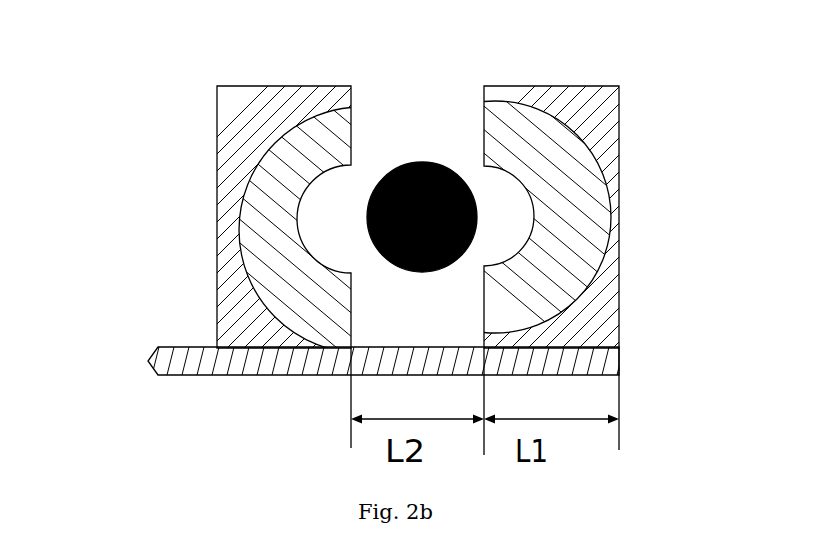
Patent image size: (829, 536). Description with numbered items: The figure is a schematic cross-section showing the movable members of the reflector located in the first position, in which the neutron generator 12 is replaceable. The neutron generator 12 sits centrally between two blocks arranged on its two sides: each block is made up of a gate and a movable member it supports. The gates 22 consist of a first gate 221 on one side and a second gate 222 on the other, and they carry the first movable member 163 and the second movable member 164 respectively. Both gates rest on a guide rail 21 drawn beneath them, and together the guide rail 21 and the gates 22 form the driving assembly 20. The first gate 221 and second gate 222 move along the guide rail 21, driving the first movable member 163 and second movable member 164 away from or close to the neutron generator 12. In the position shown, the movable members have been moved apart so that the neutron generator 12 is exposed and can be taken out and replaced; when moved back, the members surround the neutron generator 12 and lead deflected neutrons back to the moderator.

The neutron generator 12 is at (393, 167).
The driving assembly 20 is at (88, 207).
The guide rail 21 is at (180, 362).
The gates 22 is at (237, 283).
The first gate 221 is at (285, 110).
The second gate 222 is at (542, 113).
The first movable member 163 is at (283, 263).
The second movable member 164 is at (533, 270).